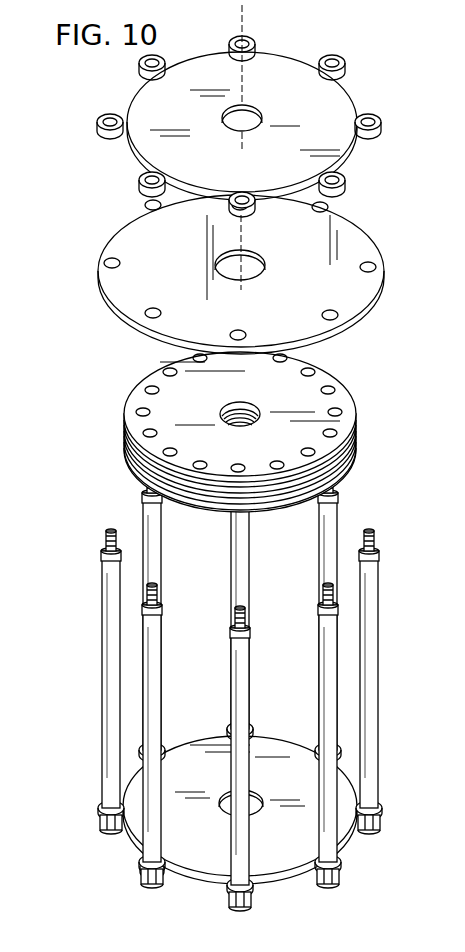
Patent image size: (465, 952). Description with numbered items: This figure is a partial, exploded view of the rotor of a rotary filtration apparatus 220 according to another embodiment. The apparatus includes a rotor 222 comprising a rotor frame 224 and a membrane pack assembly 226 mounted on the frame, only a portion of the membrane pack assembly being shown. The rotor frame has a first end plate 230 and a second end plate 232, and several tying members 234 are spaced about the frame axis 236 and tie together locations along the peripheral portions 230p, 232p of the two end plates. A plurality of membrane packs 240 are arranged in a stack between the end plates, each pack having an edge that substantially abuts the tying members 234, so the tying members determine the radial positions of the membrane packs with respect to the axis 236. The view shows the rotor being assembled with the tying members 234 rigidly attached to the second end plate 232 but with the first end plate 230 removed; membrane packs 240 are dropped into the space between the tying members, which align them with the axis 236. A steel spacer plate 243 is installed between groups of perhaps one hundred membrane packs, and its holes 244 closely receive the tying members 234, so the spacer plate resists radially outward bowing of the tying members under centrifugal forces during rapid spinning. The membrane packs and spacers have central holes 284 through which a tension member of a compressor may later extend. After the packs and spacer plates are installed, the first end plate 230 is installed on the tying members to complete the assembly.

The rotary filtration apparatus 220 is at (356, 50).
The rotor 222 is at (120, 393).
The rotor frame 224 is at (100, 636).
The membrane pack assembly 226 is at (138, 338).
The first end plate 230 is at (132, 90).
The peripheral portion of first end plate 230p is at (107, 110).
The second end plate 232 is at (130, 840).
The peripheral portion of second end plate 232p is at (142, 874).
The tying member 234 is at (100, 694).
The frame axis 236 is at (238, 538).
The membrane pack 240 is at (352, 403).
The spacer plate 243 is at (353, 215).
The hole 244 is at (384, 252).
The central hole 284 is at (253, 402).